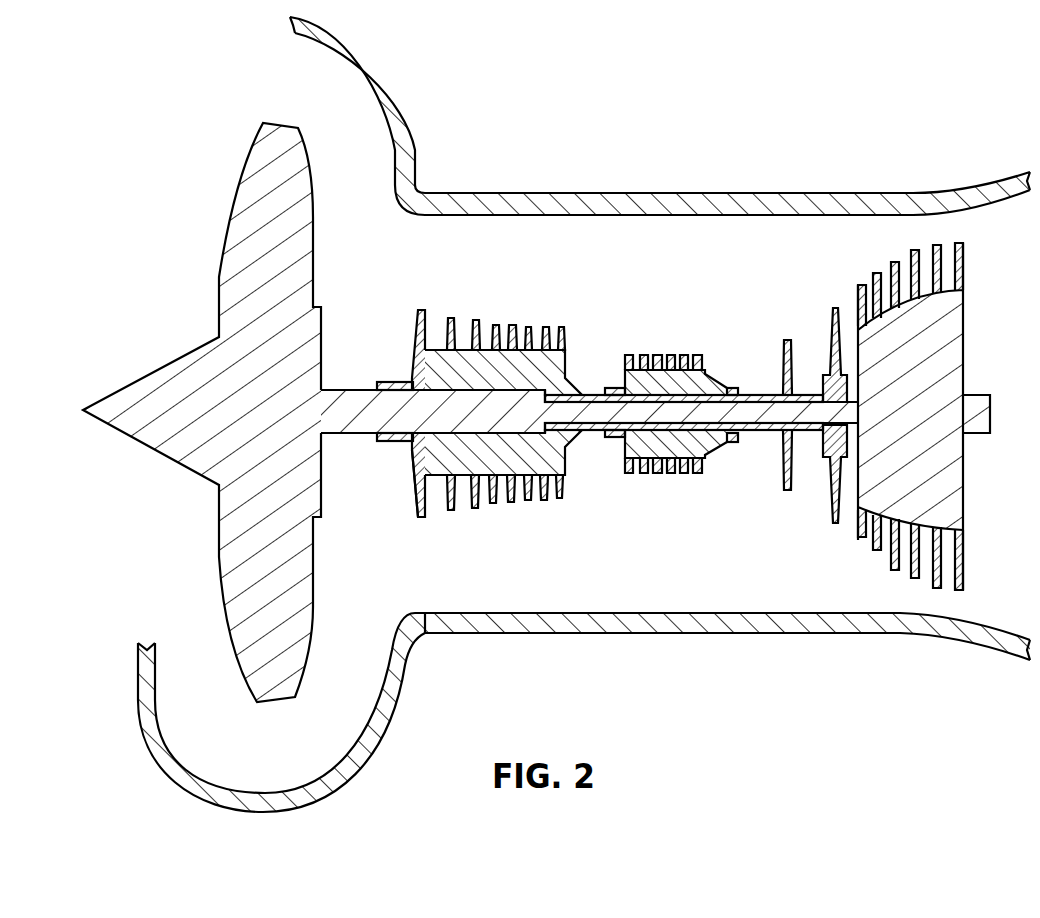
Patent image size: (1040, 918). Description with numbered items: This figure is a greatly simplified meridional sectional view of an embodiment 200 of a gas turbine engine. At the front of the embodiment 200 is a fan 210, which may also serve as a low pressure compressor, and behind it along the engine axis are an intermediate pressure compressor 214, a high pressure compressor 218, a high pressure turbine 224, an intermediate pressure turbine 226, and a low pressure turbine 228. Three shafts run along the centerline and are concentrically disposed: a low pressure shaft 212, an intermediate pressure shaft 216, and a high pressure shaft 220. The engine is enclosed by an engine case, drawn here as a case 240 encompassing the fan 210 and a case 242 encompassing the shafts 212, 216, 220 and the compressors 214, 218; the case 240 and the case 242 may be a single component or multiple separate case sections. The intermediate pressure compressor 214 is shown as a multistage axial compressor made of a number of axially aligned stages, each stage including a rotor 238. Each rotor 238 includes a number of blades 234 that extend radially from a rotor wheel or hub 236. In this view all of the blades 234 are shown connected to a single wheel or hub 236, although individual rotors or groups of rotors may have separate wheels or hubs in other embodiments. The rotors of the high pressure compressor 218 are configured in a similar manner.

The embodiment of the turbine engine 200 is at (95, 155).
The fan 210 is at (292, 128).
The low pressure shaft 212 is at (348, 389).
The intermediate pressure compressor 214 is at (500, 530).
The intermediate pressure shaft 216 is at (595, 394).
The high pressure compressor 218 is at (711, 353).
The high pressure shaft 220 is at (735, 387).
The high pressure turbine 224 is at (790, 492).
The intermediate pressure turbine 226 is at (836, 306).
The low pressure turbine 228 is at (965, 347).
The blades 234 is at (420, 309).
The rotor wheel or hub 236 is at (434, 477).
The rotor 238 is at (400, 492).
The case 240 is at (393, 83).
The case 242 is at (657, 193).